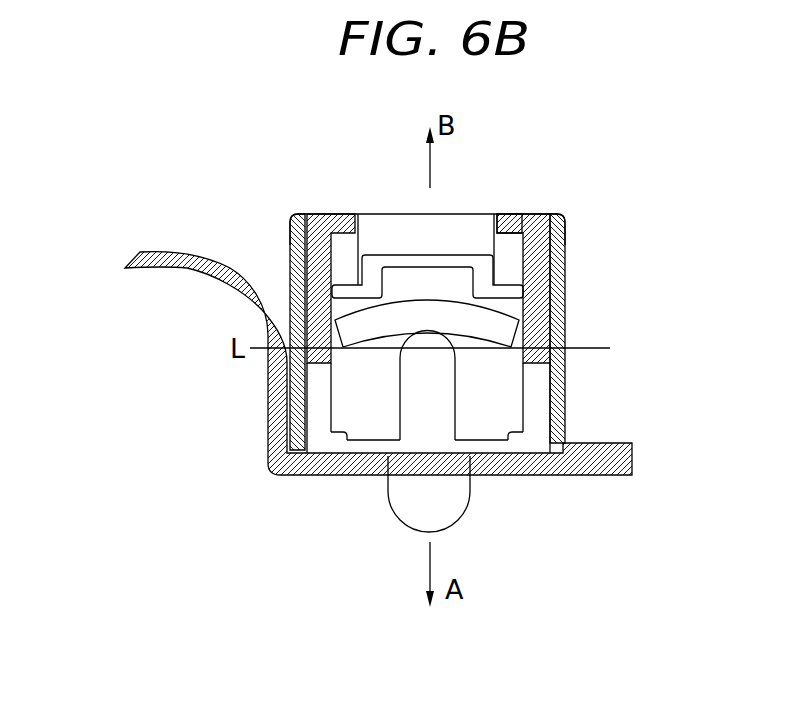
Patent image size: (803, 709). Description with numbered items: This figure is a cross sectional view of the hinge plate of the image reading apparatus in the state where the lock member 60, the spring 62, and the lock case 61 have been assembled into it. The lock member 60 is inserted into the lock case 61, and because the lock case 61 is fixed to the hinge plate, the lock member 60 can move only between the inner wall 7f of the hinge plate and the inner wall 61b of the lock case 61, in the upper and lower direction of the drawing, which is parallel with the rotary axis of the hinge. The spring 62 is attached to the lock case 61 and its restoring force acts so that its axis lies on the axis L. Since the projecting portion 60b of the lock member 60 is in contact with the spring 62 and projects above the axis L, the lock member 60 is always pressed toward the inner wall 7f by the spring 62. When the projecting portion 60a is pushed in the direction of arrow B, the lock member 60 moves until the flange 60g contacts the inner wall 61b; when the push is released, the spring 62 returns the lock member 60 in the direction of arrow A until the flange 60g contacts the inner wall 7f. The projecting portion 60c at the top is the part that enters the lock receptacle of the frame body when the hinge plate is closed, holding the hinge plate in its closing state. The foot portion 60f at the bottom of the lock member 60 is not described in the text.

The inner wall of the hinge plate 7f is at (318, 453).
The lock case 61 is at (320, 214).
The inner wall of the lock case 61b is at (338, 214).
The lock member 60 is at (481, 433).
The projecting portion 60a is at (397, 500).
The projecting portion 60b is at (433, 342).
The projecting portion 60c is at (492, 214).
The bottom foot portion 60f is at (510, 452).
The flange 60g is at (503, 286).
The spring 62 is at (505, 318).